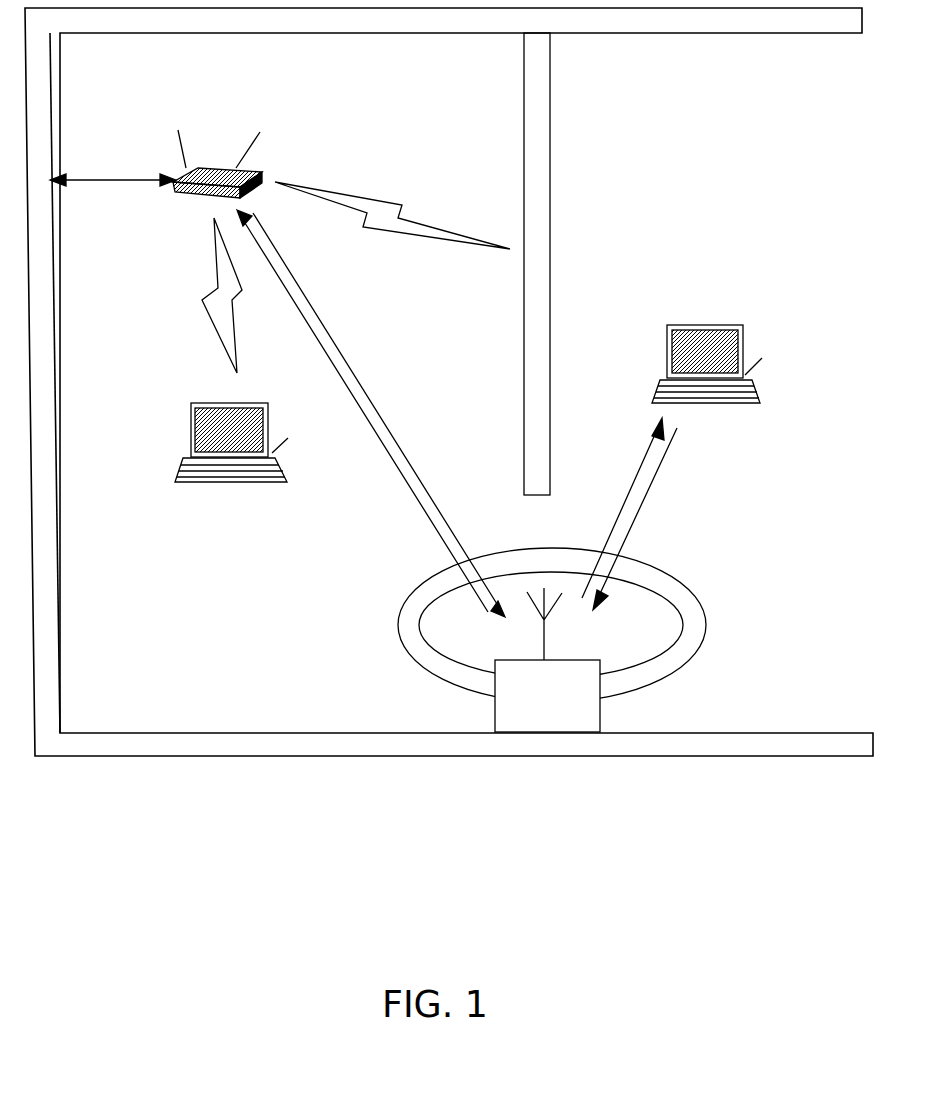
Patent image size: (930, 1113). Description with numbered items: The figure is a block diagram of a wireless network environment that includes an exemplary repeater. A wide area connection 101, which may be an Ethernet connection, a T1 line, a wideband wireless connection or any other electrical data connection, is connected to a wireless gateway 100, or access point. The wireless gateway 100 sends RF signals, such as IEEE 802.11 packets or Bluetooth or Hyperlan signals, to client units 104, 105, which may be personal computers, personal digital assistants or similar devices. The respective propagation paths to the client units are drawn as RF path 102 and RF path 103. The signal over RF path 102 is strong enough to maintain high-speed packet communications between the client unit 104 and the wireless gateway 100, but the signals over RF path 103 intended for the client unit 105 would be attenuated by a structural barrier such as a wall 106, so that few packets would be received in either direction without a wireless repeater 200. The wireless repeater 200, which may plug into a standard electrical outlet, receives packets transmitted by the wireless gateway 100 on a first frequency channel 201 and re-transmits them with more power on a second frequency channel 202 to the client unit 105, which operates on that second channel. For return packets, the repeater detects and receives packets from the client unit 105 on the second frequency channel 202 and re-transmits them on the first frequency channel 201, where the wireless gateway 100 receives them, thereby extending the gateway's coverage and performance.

The wireless gateway 100 is at (263, 174).
The wide area connection 101 is at (107, 178).
The RF path 102 is at (216, 270).
The RF path 103 is at (383, 197).
The client unit 104 is at (190, 415).
The client unit 105 is at (742, 327).
The wall 106 is at (555, 213).
The wireless repeater 200 is at (600, 712).
The first frequency channel 201 is at (378, 407).
The second frequency channel 202 is at (655, 487).